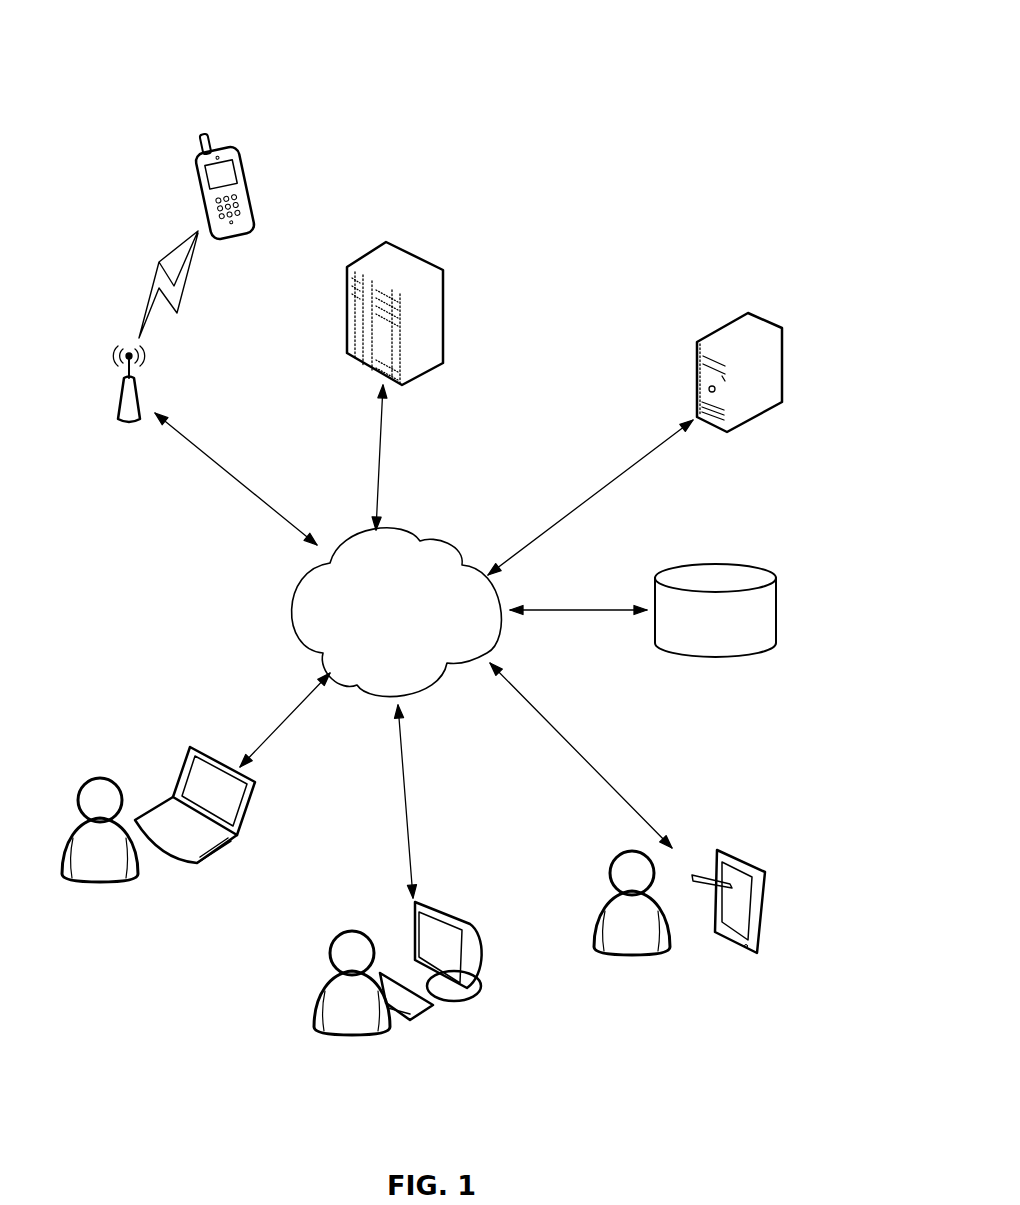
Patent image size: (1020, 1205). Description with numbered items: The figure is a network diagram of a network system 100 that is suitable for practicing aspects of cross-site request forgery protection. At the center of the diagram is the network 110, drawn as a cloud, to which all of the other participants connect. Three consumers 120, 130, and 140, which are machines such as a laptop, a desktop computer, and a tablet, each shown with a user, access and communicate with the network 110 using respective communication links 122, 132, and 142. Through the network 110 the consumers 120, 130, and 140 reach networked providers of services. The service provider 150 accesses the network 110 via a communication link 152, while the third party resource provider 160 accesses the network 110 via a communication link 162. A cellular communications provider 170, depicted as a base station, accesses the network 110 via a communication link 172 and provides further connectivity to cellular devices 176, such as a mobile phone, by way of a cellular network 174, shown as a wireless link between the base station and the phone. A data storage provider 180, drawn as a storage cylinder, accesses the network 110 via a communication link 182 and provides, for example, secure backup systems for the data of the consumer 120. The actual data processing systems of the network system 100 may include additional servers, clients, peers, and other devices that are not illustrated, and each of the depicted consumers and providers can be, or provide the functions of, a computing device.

The network system 100 is at (597, 95).
The network 110 is at (385, 633).
The consumer 120 is at (178, 763).
The communication link 122 is at (280, 720).
The consumer 130 is at (475, 940).
The communication link 132 is at (410, 830).
The consumer 140 is at (757, 858).
The communication link 142 is at (620, 790).
The service provider 150 is at (427, 258).
The communication link 152 is at (377, 415).
The third party resource provider 160 is at (692, 342).
The communication link 162 is at (587, 492).
The cellular communications provider 170 is at (112, 338).
The communication link 172 is at (263, 497).
The cellular network 174 is at (183, 298).
The cellular devices 176 is at (235, 157).
The data storage provider 180 is at (740, 563).
The communication link 182 is at (570, 610).